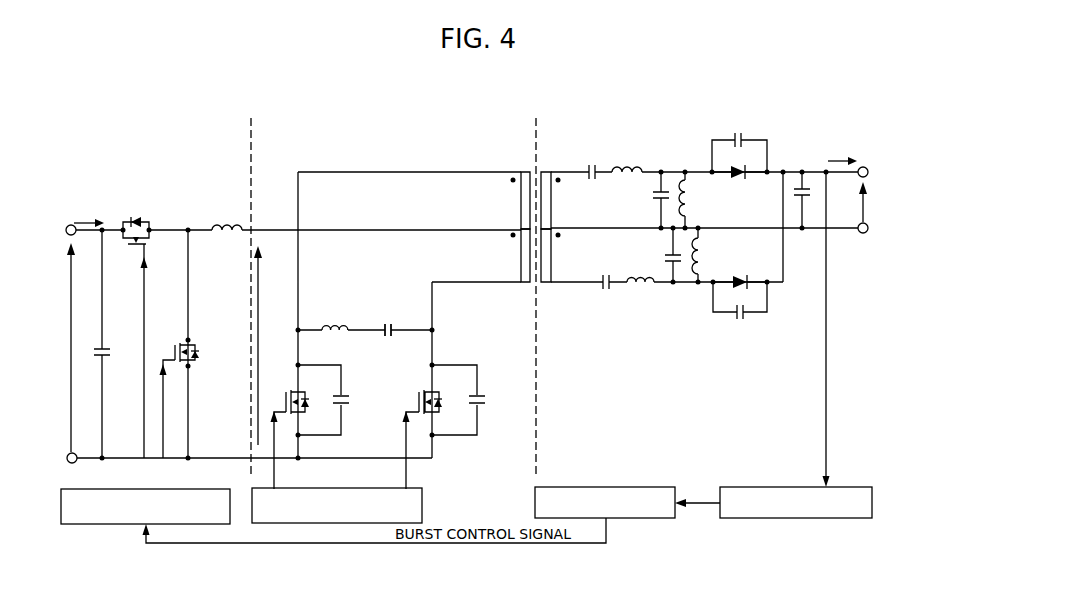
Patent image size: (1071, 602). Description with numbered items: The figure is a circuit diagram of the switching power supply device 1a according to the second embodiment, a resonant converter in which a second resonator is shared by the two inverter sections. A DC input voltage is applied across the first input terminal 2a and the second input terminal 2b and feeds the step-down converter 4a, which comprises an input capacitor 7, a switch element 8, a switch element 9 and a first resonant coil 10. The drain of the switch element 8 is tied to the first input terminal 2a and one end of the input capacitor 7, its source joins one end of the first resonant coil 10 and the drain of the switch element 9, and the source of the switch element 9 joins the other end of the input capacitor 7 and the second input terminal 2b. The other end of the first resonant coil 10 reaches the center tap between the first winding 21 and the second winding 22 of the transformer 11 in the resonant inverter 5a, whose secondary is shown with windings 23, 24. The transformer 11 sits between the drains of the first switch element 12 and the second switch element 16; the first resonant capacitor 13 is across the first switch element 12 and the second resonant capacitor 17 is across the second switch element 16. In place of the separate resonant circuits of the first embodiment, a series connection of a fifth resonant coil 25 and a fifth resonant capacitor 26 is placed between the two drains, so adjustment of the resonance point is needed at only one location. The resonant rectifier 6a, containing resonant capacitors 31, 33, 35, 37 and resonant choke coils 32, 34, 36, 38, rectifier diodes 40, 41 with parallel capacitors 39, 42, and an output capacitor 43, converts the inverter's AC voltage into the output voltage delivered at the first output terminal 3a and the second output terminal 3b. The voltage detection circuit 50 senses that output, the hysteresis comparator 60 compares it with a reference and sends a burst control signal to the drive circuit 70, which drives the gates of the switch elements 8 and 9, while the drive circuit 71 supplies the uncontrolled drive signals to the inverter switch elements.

The switching power supply device 1a is at (518, 81).
The first input terminal 2a is at (70, 225).
The second input terminal 2b is at (70, 463).
The first output terminal 3a is at (864, 166).
The second output terminal 3b is at (866, 233).
The step-down converter 4a is at (165, 121).
The resonant inverter 5a is at (397, 119).
The resonant rectifier 6a is at (679, 116).
The input capacitor 7 is at (110, 352).
The switch element 8 is at (128, 248).
The switch element 9 is at (178, 345).
The first resonant coil 10 is at (227, 223).
The transformer 11 is at (531, 165).
The first switch element 12 is at (286, 392).
The first resonant capacitor 13 is at (336, 397).
The second switch element 16 is at (419, 392).
The second resonant capacitor 17 is at (470, 397).
The first winding 21 is at (517, 217).
The second winding 22 is at (517, 257).
The secondary winding 23 is at (552, 218).
The secondary winding 24 is at (552, 258).
The fifth resonant coil 25 is at (334, 321).
The fifth resonant capacitor 26 is at (388, 321).
The resonant capacitor 31 is at (591, 164).
The resonant choke coil 32 is at (626, 160).
The resonant capacitor 33 is at (606, 289).
The resonant choke coil 34 is at (642, 293).
The resonant capacitor 35 is at (654, 197).
The resonant choke coil 36 is at (687, 194).
The resonant capacitor 37 is at (667, 257).
The resonant choke coil 38 is at (700, 251).
The capacitor 39 is at (738, 132).
The rectifier diode 40 is at (744, 180).
The rectifier diode 41 is at (744, 275).
The capacitor 42 is at (742, 320).
The output capacitor 43 is at (806, 196).
The voltage detection circuit 50 is at (836, 486).
The hysteresis comparator 60 is at (651, 486).
The drive circuit 70 is at (205, 489).
The drive circuit 71 is at (363, 488).